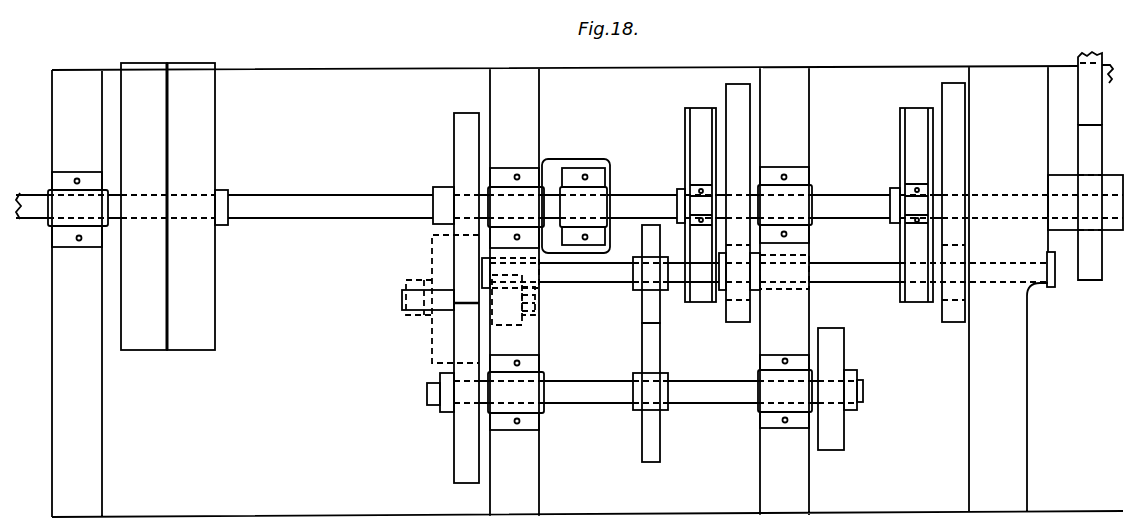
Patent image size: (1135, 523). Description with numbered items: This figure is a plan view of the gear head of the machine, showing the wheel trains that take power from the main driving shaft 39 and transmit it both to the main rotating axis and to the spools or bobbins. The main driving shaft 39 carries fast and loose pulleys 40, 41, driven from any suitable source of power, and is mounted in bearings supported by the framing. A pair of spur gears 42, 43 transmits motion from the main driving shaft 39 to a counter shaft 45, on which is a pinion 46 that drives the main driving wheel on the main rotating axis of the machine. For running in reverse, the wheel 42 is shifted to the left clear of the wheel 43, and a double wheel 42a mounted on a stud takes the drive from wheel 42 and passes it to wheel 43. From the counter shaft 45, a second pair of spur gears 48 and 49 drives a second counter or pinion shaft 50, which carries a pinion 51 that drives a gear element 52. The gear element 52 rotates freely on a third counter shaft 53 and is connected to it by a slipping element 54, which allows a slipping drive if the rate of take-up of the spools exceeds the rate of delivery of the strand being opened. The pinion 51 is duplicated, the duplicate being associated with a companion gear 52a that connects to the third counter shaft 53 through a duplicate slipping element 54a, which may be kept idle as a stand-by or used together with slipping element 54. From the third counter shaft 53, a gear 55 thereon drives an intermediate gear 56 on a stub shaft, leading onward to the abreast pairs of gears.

The main driving shaft 39 is at (294, 196).
The fast pulley 40 is at (210, 156).
The loose pulley 41 is at (154, 277).
The spur gear 42 is at (460, 255).
The double wheel 42a is at (432, 328).
The spur gear 43 is at (460, 348).
The counter shaft 45 is at (588, 397).
The pinion 46 is at (845, 347).
The spur gear 48 is at (645, 352).
The spur gear 49 is at (643, 307).
The pinion shaft 50 is at (585, 281).
The pinion 51 is at (738, 302).
The gear element 52 is at (750, 149).
The companion gear 52a is at (967, 158).
The third counter shaft 53 is at (642, 193).
The slipping element 54 is at (699, 158).
The duplicate slipping element 54a is at (908, 248).
The gear 55 is at (1087, 157).
The intermediate gear 56 is at (1085, 111).